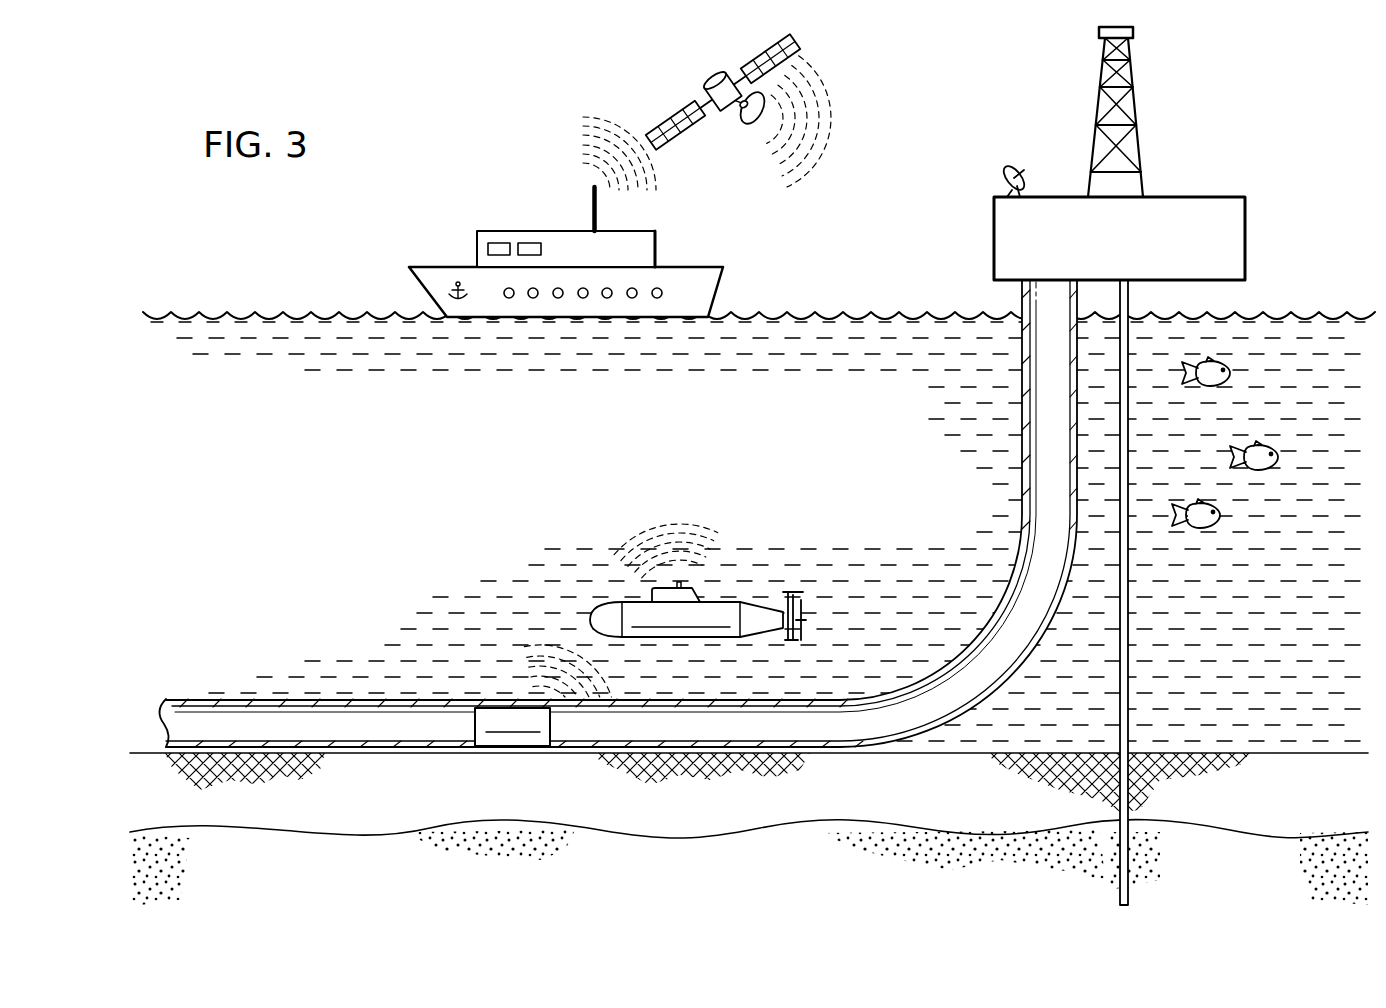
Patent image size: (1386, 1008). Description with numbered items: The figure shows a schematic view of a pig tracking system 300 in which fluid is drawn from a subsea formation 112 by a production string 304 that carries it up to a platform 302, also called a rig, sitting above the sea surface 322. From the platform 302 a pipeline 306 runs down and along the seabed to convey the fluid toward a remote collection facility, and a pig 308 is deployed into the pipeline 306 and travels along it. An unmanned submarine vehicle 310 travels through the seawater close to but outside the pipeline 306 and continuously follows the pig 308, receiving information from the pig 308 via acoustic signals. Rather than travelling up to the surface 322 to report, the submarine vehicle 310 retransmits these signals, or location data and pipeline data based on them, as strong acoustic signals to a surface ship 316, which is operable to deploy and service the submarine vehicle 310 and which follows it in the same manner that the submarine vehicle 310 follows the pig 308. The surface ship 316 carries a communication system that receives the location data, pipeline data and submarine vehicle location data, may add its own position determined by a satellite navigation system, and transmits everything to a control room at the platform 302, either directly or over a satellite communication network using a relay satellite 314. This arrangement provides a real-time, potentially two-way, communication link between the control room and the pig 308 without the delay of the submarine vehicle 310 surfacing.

The pig tracking system 300 is at (536, 70).
The platform 302 is at (1137, 103).
The production string 304 is at (1128, 640).
The pipeline 306 is at (1020, 478).
The pig 308 is at (518, 740).
The submarine vehicle 310 is at (685, 638).
The satellite 314 is at (683, 114).
The surface ship 316 is at (533, 231).
The surface 322 is at (350, 320).
The subsea formation 112 is at (1338, 832).